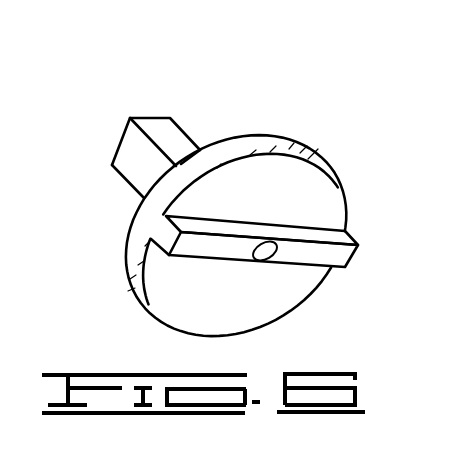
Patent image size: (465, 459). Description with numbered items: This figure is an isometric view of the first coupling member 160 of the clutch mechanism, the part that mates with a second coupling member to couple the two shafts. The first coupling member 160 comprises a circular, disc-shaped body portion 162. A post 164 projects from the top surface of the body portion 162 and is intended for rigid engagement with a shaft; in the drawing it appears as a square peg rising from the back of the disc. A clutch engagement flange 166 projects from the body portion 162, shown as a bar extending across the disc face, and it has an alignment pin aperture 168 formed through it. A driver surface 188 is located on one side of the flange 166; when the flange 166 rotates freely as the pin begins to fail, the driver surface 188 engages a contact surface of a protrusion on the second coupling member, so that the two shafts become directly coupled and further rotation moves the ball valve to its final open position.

The first coupling member 160 is at (140, 66).
The body portion 162 is at (265, 143).
The post 164 is at (138, 173).
The clutch engagement flange 166 is at (342, 245).
The alignment pin aperture 168 is at (257, 258).
The driver surface 188 is at (313, 230).